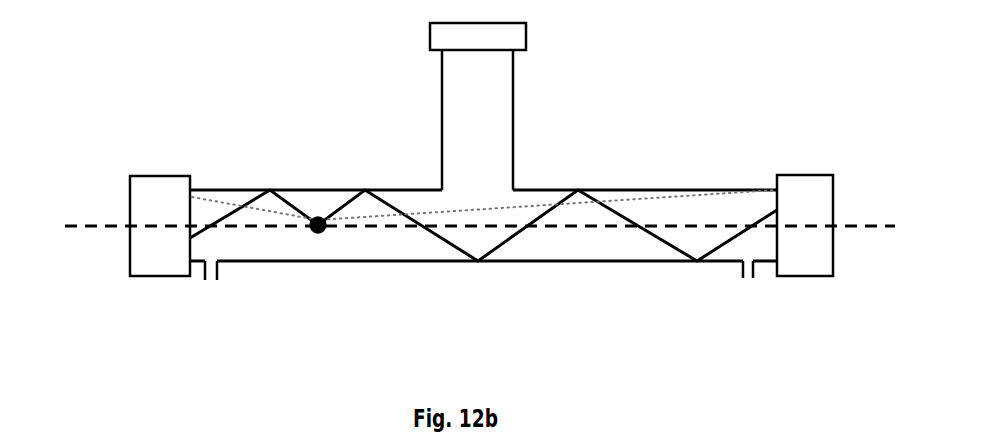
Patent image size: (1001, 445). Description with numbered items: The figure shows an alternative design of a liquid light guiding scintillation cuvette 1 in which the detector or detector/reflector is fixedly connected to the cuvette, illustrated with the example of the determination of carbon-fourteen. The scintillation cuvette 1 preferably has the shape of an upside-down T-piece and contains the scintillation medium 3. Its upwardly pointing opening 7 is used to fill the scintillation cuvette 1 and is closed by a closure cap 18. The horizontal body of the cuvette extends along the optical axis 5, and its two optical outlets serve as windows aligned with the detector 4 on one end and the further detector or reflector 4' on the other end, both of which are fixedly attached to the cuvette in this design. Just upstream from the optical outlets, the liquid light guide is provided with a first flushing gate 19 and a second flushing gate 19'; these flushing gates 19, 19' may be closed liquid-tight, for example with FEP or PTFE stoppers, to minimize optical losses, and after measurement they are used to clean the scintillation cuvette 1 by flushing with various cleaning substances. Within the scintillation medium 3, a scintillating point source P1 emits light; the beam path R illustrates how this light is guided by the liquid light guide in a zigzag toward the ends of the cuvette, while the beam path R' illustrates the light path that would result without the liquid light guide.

The scintillation cuvette 1 is at (403, 262).
The scintillation medium 3 is at (577, 243).
The detector 4 is at (148, 202).
The further detector or reflector 4' is at (836, 202).
The optical axis 5 is at (72, 229).
The opening 7 is at (515, 75).
The closure cap 18 is at (430, 36).
The first flushing gate 19 is at (185, 299).
The second flushing gate 19' is at (754, 311).
The beam path with liquid light guide R is at (483, 196).
The beam path without liquid light guide R' is at (483, 175).
The scintillating point source P1 is at (316, 233).